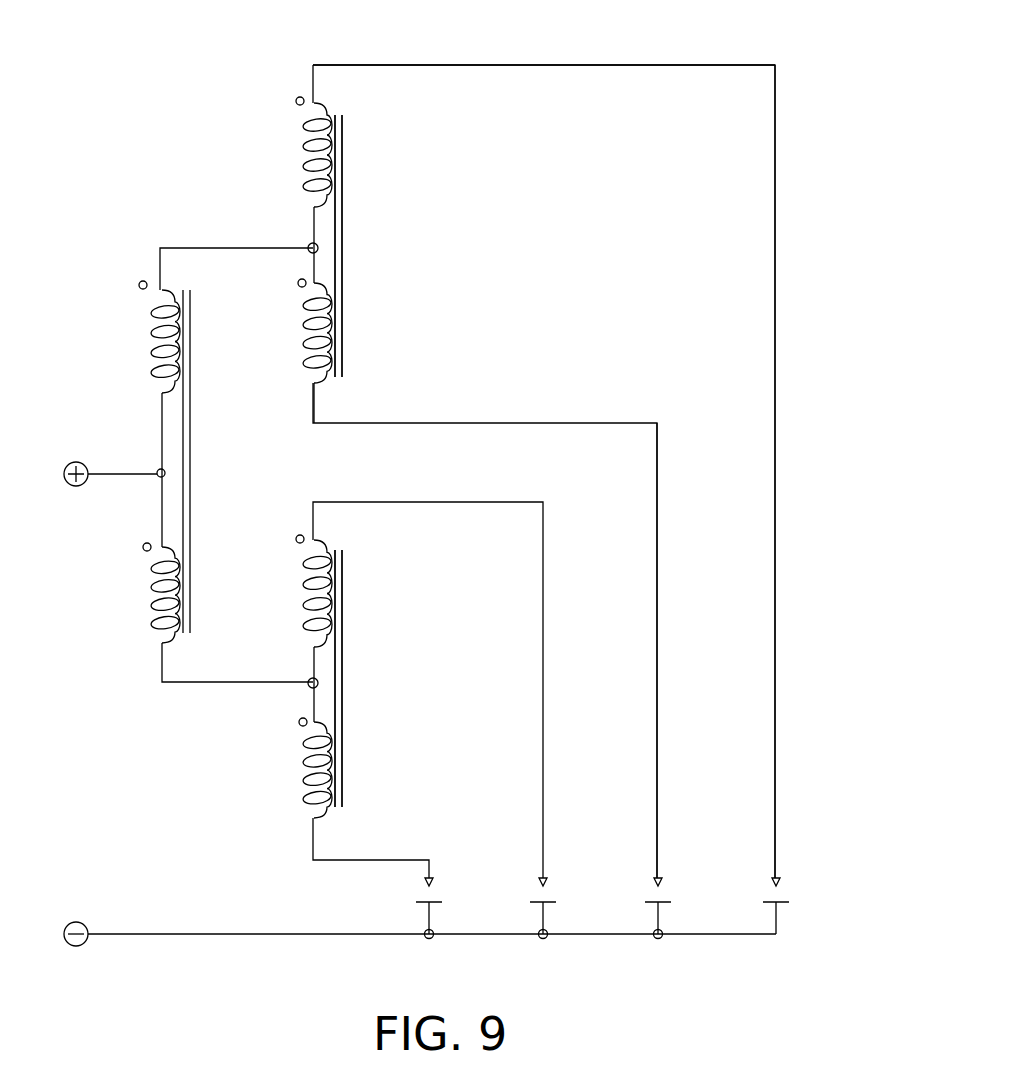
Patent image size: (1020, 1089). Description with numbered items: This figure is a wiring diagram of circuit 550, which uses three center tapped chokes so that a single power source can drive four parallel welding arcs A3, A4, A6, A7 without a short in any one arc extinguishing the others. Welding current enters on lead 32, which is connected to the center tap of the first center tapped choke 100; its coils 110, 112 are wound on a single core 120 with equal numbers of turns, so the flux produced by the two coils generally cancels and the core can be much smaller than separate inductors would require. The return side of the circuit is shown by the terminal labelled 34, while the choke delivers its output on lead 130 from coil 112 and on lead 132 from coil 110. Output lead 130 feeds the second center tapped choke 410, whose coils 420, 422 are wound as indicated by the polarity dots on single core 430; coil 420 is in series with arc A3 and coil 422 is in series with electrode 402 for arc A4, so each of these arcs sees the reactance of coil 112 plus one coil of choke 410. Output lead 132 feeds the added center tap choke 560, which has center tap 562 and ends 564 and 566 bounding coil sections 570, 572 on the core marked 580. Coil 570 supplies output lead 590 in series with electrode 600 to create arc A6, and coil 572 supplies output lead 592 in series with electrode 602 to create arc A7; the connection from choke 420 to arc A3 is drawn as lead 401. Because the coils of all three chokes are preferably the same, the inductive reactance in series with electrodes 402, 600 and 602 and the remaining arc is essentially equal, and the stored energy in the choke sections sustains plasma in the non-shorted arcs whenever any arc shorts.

The circuit 550 is at (718, 60).
The output lead 592 is at (590, 65).
The electrode 602 is at (776, 677).
The output lead 590 is at (578, 423).
The electrode 600 is at (657, 685).
The electrode 402 is at (543, 715).
The conductor to A3 401 is at (370, 858).
The end 566 is at (320, 100).
The center tap choke 560 is at (353, 183).
The coil 572 is at (302, 143).
The center tap 562 is at (318, 247).
The transformer core 580 is at (343, 283).
The coil 570 is at (304, 322).
The end 564 is at (340, 377).
The output lead 132 is at (225, 248).
The coil 110 is at (150, 320).
The lead 32 is at (128, 470).
The center tapped choke 100 is at (198, 462).
The core 120 is at (191, 510).
The coil 112 is at (148, 594).
The output lead 130 is at (192, 683).
The second center tapped choke 410 is at (352, 612).
The coil 422 is at (305, 598).
The core 430 is at (343, 722).
The coil 420 is at (305, 780).
The arc A3 is at (438, 892).
The arc A4 is at (552, 892).
The arc A6 is at (665, 892).
The arc A7 is at (783, 892).
The negative terminal 34 is at (163, 934).